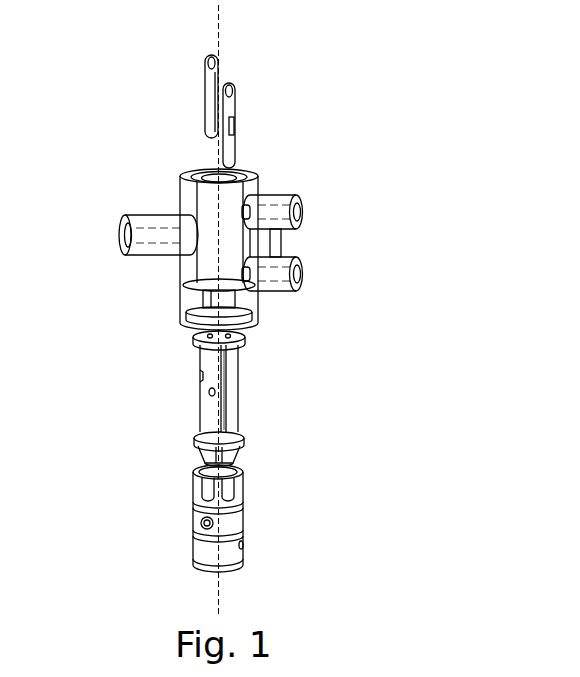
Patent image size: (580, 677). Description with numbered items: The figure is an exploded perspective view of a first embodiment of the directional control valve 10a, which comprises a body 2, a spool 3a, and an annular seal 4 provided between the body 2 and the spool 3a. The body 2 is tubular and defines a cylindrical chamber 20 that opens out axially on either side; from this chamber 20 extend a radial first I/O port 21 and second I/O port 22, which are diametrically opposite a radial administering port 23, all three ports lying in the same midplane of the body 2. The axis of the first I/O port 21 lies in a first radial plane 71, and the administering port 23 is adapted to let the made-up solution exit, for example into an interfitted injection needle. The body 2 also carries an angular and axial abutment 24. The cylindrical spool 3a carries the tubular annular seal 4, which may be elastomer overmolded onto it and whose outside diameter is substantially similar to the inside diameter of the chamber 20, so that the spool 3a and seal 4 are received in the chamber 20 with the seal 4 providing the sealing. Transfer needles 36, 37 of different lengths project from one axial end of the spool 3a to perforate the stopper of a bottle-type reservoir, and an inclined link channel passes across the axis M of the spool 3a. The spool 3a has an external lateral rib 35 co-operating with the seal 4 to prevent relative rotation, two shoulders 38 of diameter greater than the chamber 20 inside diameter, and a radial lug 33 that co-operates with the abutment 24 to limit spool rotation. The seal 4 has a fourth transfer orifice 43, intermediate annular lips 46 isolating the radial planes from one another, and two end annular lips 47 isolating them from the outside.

The axis of the spool M is at (221, 14).
The directional control valve 10a is at (321, 168).
The body 2 is at (182, 268).
The cylindrical chamber 20 is at (203, 169).
The first inlet/outlet port 21 is at (303, 278).
The second inlet/outlet port 22 is at (303, 215).
The administering port 23 is at (121, 232).
The angular and axial abutment 24 is at (187, 315).
The spool 3a is at (240, 373).
The radial lug 33 is at (200, 457).
The external lateral rib 35 is at (240, 412).
The transfer needle 36 is at (233, 107).
The transfer needle 37 is at (208, 88).
The shoulders 38 is at (247, 338).
The annular seal 4 is at (253, 519).
The fourth transfer orifice 43 is at (198, 520).
The intermediate annular lips 46 is at (245, 504).
The end annular lips 47 is at (245, 473).
The first radial plane 71 is at (208, 393).